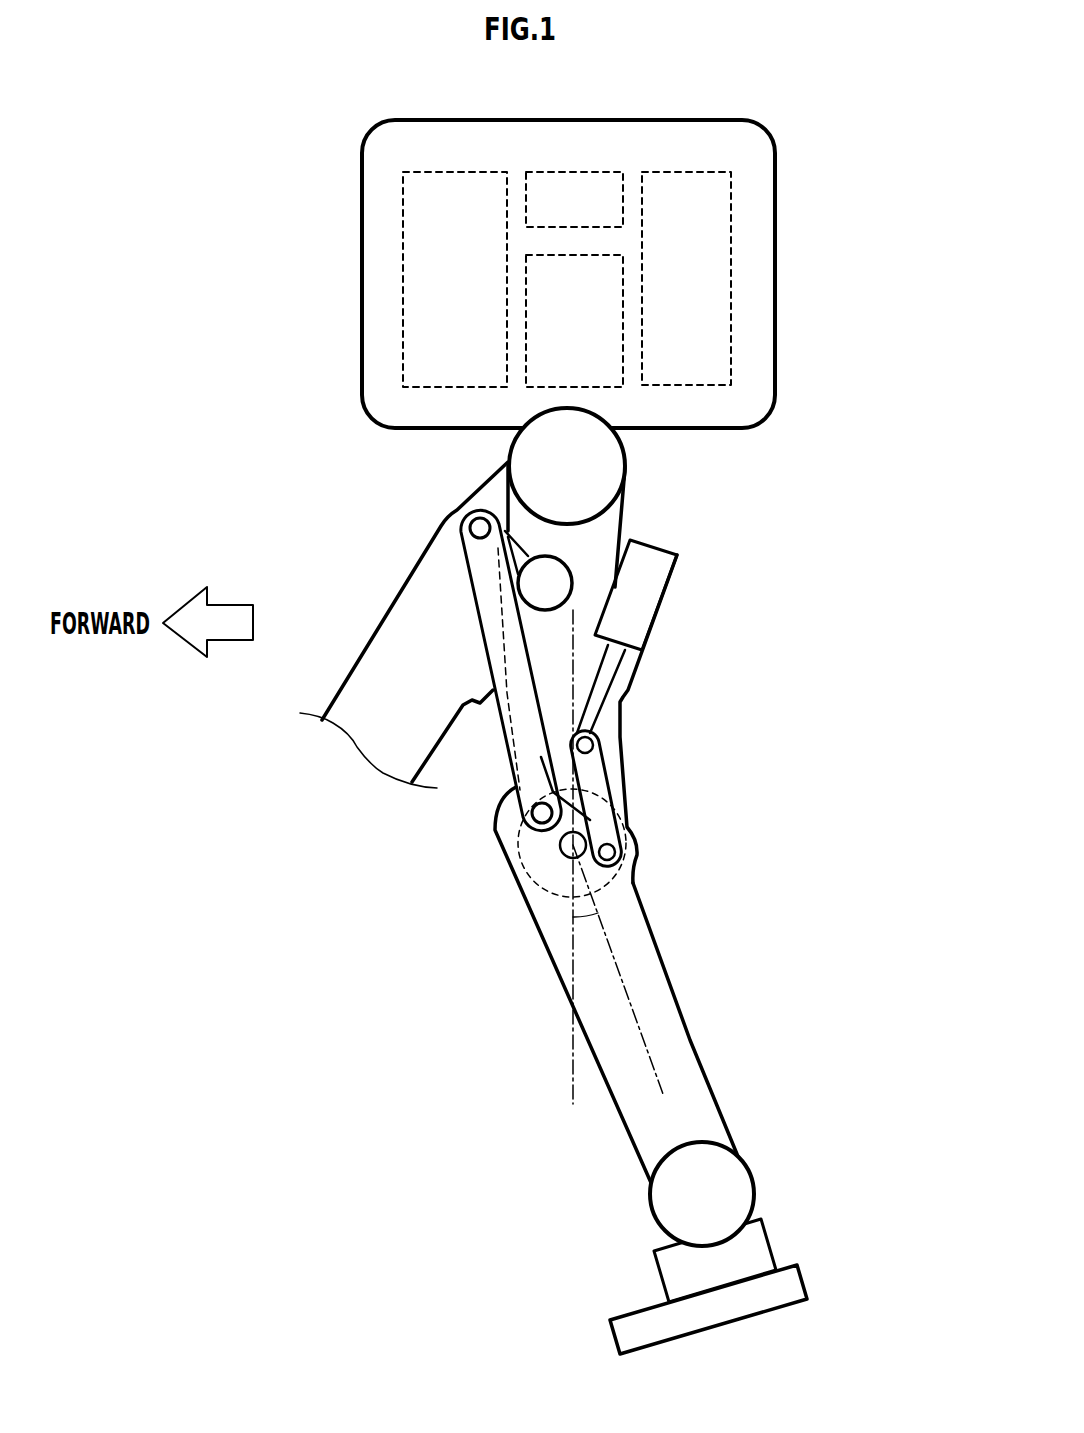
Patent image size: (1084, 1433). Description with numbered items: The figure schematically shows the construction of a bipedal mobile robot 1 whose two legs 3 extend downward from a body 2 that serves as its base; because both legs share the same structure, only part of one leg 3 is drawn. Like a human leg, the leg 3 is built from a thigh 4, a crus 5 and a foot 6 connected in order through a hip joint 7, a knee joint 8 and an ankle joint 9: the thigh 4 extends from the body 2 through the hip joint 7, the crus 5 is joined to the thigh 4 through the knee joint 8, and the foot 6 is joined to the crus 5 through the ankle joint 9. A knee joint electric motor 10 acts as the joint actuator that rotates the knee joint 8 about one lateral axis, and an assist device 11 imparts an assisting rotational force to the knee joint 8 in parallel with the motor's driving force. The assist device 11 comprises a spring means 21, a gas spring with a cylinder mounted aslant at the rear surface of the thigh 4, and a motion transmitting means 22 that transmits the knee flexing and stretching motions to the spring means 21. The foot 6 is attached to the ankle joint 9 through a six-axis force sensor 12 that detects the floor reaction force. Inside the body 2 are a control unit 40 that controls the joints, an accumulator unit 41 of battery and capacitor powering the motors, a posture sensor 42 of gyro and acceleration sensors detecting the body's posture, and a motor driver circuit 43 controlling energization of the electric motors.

The robot 1 is at (867, 432).
The body 2 is at (773, 380).
The leg 3 is at (297, 588).
The thigh 4 is at (608, 522).
The crus 5 is at (687, 1030).
The foot 6 is at (806, 1287).
The hip joint 7 is at (627, 455).
The knee joint 8 is at (500, 870).
The ankle joint 9 is at (754, 1185).
The knee joint electric motor 10 is at (573, 587).
The assist device 11 is at (712, 683).
The six-axis force sensor 12 is at (773, 1246).
The spring means 21 is at (650, 653).
The motion transmitting means 22 is at (618, 736).
The control unit 40 is at (450, 170).
The accumulator unit 41 is at (690, 170).
The posture sensor 42 is at (585, 170).
The motor driver circuit 43 is at (540, 388).